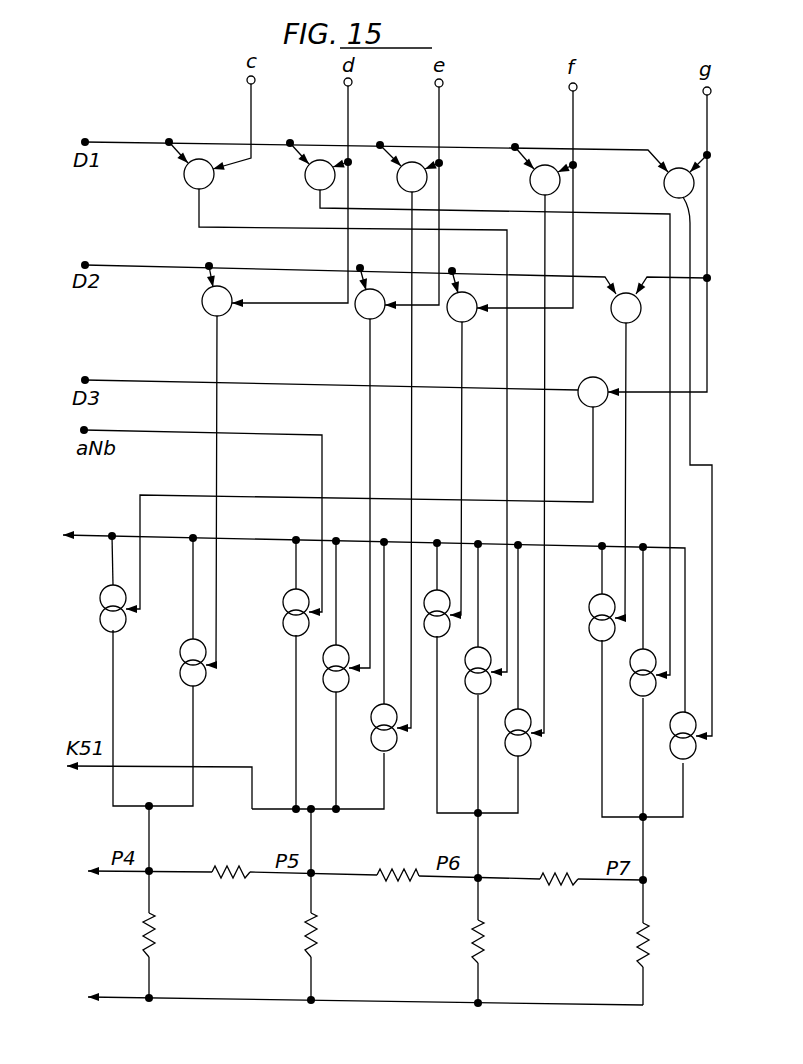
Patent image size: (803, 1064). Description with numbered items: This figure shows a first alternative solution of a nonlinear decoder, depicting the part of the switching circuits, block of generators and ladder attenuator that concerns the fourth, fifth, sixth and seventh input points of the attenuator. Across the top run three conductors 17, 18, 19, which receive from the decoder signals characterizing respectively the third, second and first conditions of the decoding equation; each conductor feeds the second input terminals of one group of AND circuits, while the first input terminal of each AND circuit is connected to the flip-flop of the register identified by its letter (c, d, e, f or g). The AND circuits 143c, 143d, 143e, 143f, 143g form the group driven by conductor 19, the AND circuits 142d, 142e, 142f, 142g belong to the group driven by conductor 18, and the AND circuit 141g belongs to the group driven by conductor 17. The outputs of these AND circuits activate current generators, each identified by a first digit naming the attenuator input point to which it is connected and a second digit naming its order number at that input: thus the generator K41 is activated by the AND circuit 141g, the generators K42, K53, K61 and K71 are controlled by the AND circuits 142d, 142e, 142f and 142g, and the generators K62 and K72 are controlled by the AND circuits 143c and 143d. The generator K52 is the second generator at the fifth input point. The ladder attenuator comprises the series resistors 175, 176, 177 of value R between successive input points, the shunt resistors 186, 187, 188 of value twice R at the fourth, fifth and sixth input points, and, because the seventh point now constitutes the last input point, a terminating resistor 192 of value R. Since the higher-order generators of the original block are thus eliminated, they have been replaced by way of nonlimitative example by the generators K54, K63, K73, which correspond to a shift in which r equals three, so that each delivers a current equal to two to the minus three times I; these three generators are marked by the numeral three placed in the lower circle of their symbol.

The conductor 19 is at (376, 145).
The conductor 18 is at (350, 268).
The conductor 17 is at (329, 371).
The AND circuit 143c is at (168, 163).
The AND circuit 143d is at (294, 164).
The AND circuit 143e is at (387, 166).
The AND circuit 143f is at (516, 169).
The AND circuit 143g is at (648, 183).
The AND circuit 142d is at (186, 289).
The AND circuit 142e is at (344, 300).
The AND circuit 142f is at (444, 306).
The AND circuit 142g is at (601, 322).
The AND circuit 141g is at (577, 379).
The resistor 175 is at (235, 860).
The resistor 176 is at (400, 862).
The resistor 177 is at (564, 869).
The resistor 186 is at (127, 935).
The resistor 187 is at (291, 935).
The resistor 188 is at (457, 941).
The resistor 192 is at (660, 945).
The generator K41 is at (95, 608).
The generator K42 is at (169, 662).
The generator K52 is at (276, 612).
The generator K53 is at (323, 668).
The generator K54 is at (375, 749).
The generator K61 is at (452, 606).
The generator K62 is at (490, 681).
The generator K63 is at (538, 735).
The generator K71 is at (583, 617).
The generator K72 is at (632, 676).
The generator K73 is at (697, 751).